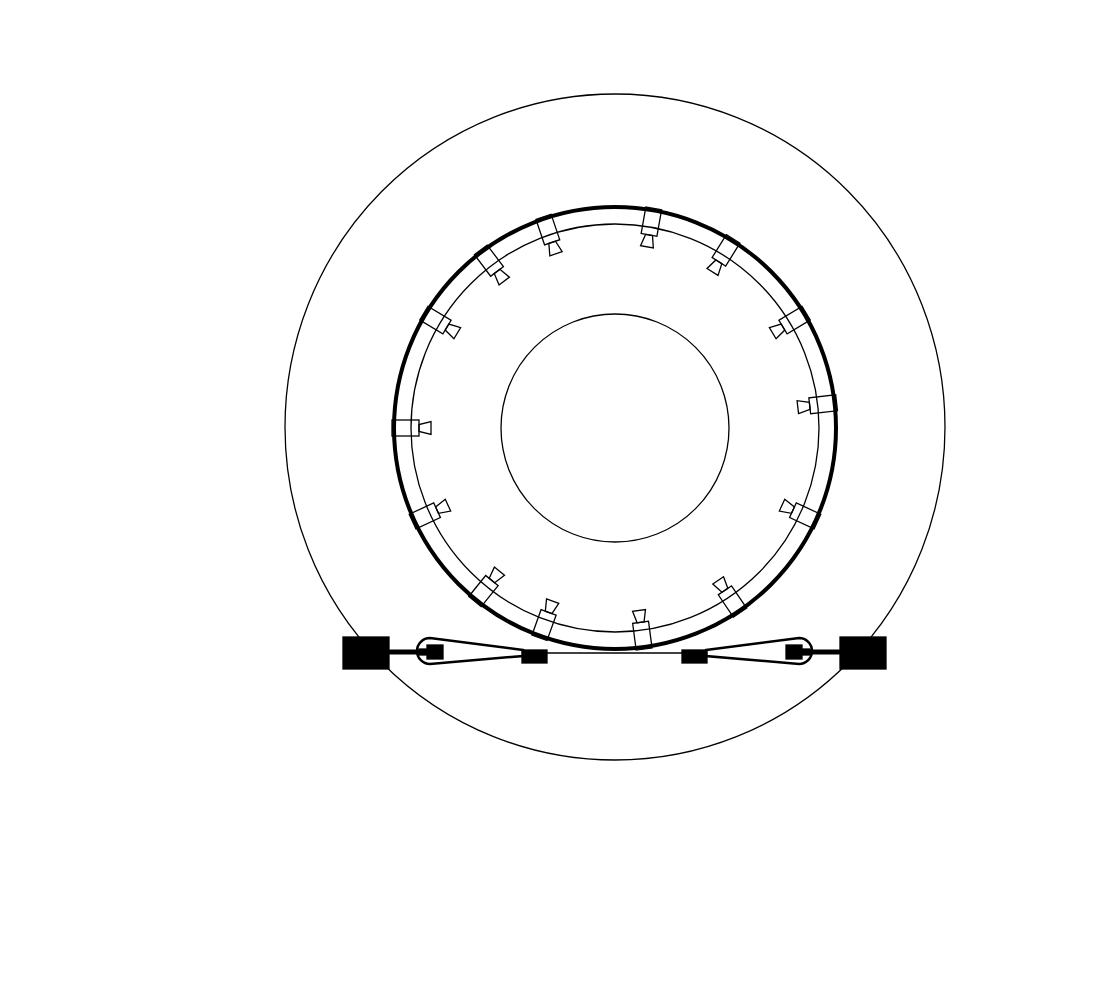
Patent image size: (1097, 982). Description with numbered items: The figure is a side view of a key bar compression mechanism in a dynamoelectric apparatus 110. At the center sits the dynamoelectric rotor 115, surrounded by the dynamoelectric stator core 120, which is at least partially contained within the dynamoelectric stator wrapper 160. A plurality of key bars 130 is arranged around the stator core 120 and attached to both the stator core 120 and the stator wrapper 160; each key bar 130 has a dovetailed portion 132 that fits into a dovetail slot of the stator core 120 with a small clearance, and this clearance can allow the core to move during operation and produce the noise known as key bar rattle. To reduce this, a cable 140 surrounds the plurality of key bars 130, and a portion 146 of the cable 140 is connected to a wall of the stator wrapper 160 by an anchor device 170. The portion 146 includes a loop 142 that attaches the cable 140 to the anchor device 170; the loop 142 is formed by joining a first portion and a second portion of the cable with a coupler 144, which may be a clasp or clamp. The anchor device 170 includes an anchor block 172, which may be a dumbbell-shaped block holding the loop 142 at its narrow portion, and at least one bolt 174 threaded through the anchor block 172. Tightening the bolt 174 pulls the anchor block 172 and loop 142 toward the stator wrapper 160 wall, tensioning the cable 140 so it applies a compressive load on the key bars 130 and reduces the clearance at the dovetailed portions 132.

The dynamoelectric apparatus 110 is at (360, 143).
The dynamoelectric rotor 115 is at (651, 436).
The dynamoelectric stator core 120 is at (641, 282).
The key bars 130 is at (390, 430).
The dovetailed portion 132 is at (722, 268).
The cable 140 is at (836, 350).
The loop 142 is at (483, 670).
The coupler 144 is at (688, 665).
The portion of cable 146 is at (815, 672).
The dynamoelectric stator wrapper 160 is at (641, 160).
The anchor device 170 is at (893, 657).
The anchor block 172 is at (422, 642).
The bolt 174 is at (403, 667).